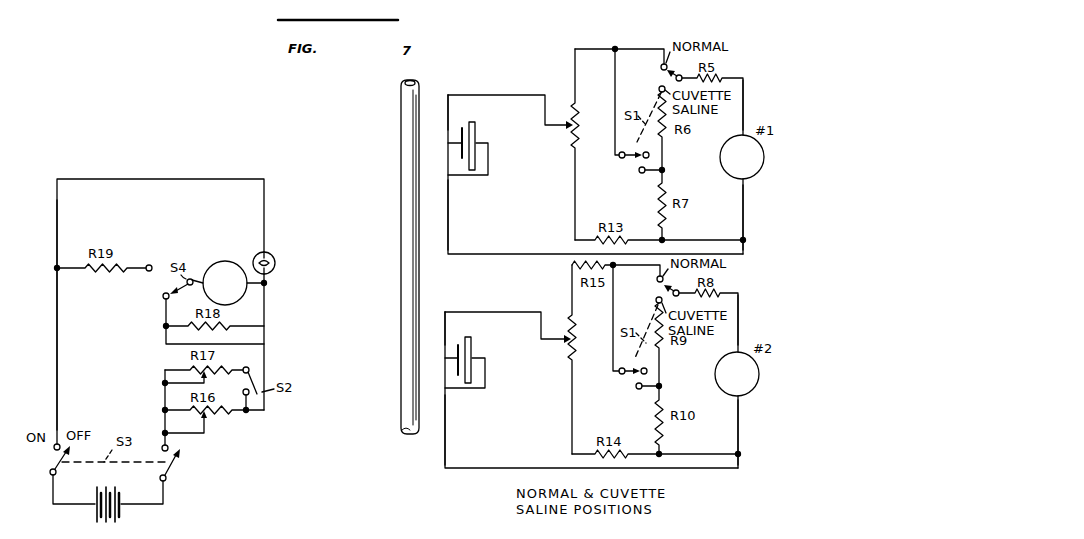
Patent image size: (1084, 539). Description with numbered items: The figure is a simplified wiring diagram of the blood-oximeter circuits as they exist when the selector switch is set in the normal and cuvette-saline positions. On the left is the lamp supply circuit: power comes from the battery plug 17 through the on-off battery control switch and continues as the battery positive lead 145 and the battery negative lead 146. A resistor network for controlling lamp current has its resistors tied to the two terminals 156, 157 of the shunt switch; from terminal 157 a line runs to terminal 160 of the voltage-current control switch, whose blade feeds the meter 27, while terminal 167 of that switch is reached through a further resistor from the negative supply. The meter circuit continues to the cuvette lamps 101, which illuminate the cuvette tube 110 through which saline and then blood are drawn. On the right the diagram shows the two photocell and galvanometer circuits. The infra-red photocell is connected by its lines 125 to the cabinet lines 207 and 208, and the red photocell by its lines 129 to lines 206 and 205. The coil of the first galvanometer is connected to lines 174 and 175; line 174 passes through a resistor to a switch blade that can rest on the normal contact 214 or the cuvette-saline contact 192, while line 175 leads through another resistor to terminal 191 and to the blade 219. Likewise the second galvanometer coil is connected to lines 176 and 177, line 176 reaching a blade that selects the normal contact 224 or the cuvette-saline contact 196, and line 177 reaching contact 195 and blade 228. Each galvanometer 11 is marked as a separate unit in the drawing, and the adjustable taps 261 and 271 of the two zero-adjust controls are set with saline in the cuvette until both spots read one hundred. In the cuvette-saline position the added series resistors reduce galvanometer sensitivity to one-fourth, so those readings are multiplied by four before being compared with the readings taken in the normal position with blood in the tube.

The galvanometer 11 is at (763, 170).
The battery plug 17 is at (130, 506).
The meter 27 is at (226, 261).
The lamps 101 is at (276, 263).
The tube 110 is at (401, 412).
The lines 125 is at (448, 149).
The lines 129 is at (445, 366).
The battery positive lead 145 is at (161, 446).
The battery negative lead 146 is at (58, 355).
The terminal of switch S2 156 is at (249, 369).
The terminal of switch S2 157 is at (249, 394).
The terminal of switch S4 160 is at (163, 296).
The terminal of switch S4 167 is at (151, 265).
The line 174 is at (743, 97).
The line 175 is at (743, 220).
The line 176 is at (738, 318).
The line 177 is at (738, 438).
The terminal of switch 191 is at (641, 173).
The contact of switch 192 is at (659, 88).
The contact of switch 195 is at (638, 389).
The contact of switch 196 is at (656, 299).
The line 205 is at (446, 435).
The line 206 is at (445, 318).
The line 207 is at (448, 100).
The line 208 is at (449, 218).
The switch contact 214 is at (661, 67).
The switch blade 219 is at (621, 158).
The switch contact 224 is at (657, 279).
The switch blade 228 is at (630, 378).
The potentiometer wiper 261 is at (561, 122).
The potentiometer wiper 271 is at (556, 337).